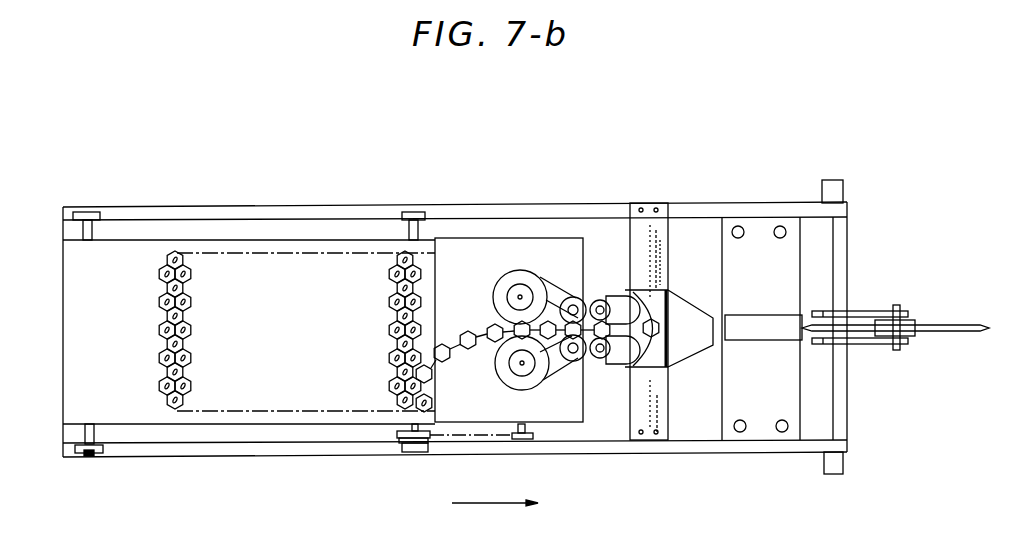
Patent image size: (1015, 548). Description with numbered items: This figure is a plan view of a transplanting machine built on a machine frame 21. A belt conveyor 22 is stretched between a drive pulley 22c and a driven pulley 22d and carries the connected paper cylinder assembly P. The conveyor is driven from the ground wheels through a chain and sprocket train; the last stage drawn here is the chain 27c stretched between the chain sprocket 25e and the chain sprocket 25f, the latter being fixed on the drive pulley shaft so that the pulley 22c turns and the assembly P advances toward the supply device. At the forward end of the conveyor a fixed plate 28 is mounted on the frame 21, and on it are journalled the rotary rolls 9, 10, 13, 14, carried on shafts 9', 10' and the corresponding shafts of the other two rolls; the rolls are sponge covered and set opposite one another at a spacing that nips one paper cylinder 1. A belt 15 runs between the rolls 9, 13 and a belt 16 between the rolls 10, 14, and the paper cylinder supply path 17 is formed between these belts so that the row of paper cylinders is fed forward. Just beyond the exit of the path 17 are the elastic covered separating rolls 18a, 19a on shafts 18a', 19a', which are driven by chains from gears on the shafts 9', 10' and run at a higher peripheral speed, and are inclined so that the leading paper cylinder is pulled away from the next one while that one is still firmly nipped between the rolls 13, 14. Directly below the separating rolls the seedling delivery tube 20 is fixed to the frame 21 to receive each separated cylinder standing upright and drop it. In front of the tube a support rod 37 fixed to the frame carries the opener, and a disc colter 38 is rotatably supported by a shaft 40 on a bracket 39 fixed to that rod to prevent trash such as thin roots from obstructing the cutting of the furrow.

The paper cylinder 1 is at (392, 304).
The rotary roll 9 is at (508, 281).
The shaft of rotary roll 9 9' is at (501, 281).
The rotary roll 10 is at (507, 376).
The shaft of rotary roll 10 10' is at (502, 383).
The rotary roll 13 is at (573, 289).
The rotary roll 14 is at (578, 360).
The belt 15 is at (560, 292).
The belt 16 is at (562, 372).
The paper cylinder supply path 17 is at (516, 328).
The separating roll 18a is at (605, 287).
The shaft of separating roll 18a 18a' is at (614, 275).
The separating roll 19a is at (611, 367).
The shaft of separating roll 19a 19a' is at (616, 382).
The seedling delivery tube 20 is at (686, 318).
The machine frame 21 is at (167, 451).
The belt conveyor 22 is at (120, 240).
The drive pulley 22c is at (407, 446).
The driven pulley 22d is at (83, 450).
The chain sprocket 25e is at (527, 440).
The chain sprocket 25f is at (400, 441).
The chain 27c is at (466, 437).
The fixed plate 28 is at (468, 252).
The support rod 37 is at (768, 328).
The disc colter 38 is at (962, 332).
The bracket 39 is at (878, 337).
The shaft 40 is at (896, 306).
The paper cylinder assembly P is at (258, 253).